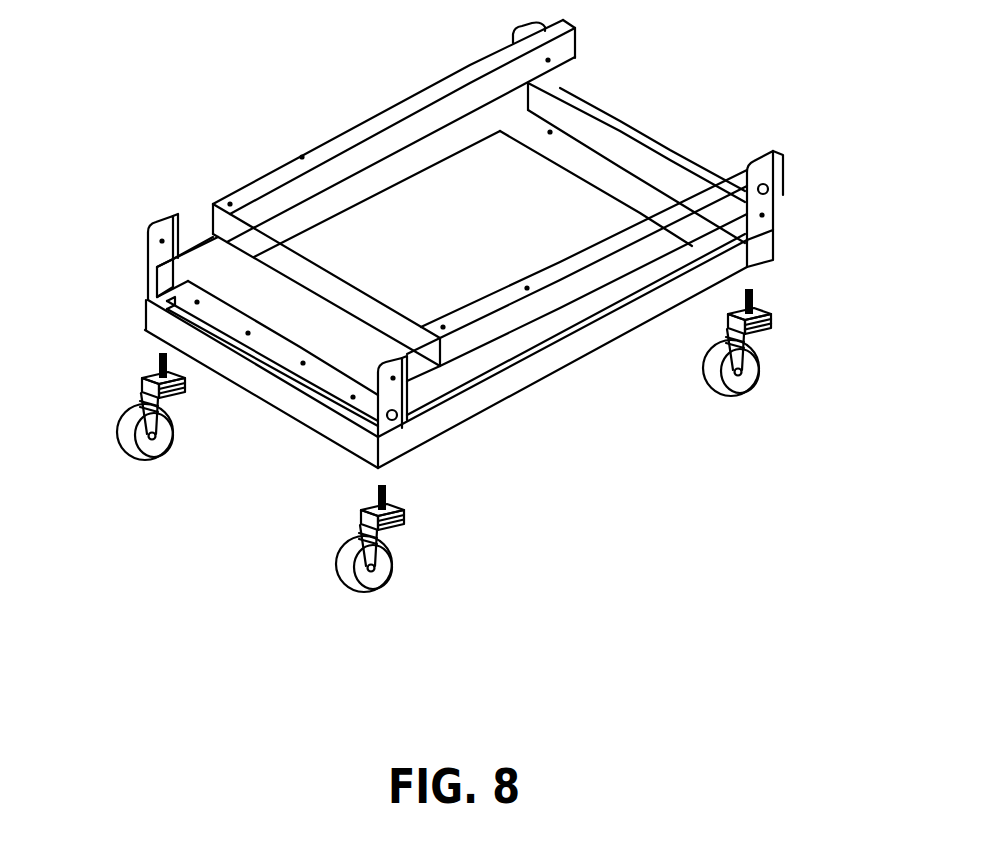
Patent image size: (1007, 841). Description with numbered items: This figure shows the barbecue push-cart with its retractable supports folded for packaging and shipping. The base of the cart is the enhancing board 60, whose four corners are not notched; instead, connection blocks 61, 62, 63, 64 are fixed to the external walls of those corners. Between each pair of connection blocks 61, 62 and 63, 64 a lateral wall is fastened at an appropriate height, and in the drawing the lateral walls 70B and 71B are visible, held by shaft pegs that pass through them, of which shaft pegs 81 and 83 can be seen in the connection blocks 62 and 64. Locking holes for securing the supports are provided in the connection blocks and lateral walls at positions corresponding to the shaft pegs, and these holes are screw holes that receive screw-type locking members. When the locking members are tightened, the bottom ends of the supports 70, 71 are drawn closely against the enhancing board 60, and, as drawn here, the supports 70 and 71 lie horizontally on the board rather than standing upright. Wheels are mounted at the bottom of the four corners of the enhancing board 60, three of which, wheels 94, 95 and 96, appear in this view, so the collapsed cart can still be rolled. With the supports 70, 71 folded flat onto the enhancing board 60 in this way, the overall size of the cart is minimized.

The enhancing board 60 is at (568, 350).
The connection block 61 is at (563, 22).
The connection block 62 is at (768, 203).
The connection block 63 is at (160, 249).
The connection block 64 is at (406, 412).
The support 70 is at (330, 285).
The lateral wall 70B is at (783, 175).
The support 71 is at (607, 143).
The lateral wall 71B is at (412, 396).
The shaft peg 81 is at (769, 190).
The shaft peg 83 is at (398, 418).
The wheel 94 is at (741, 373).
The wheel 95 is at (160, 452).
The wheel 96 is at (385, 565).